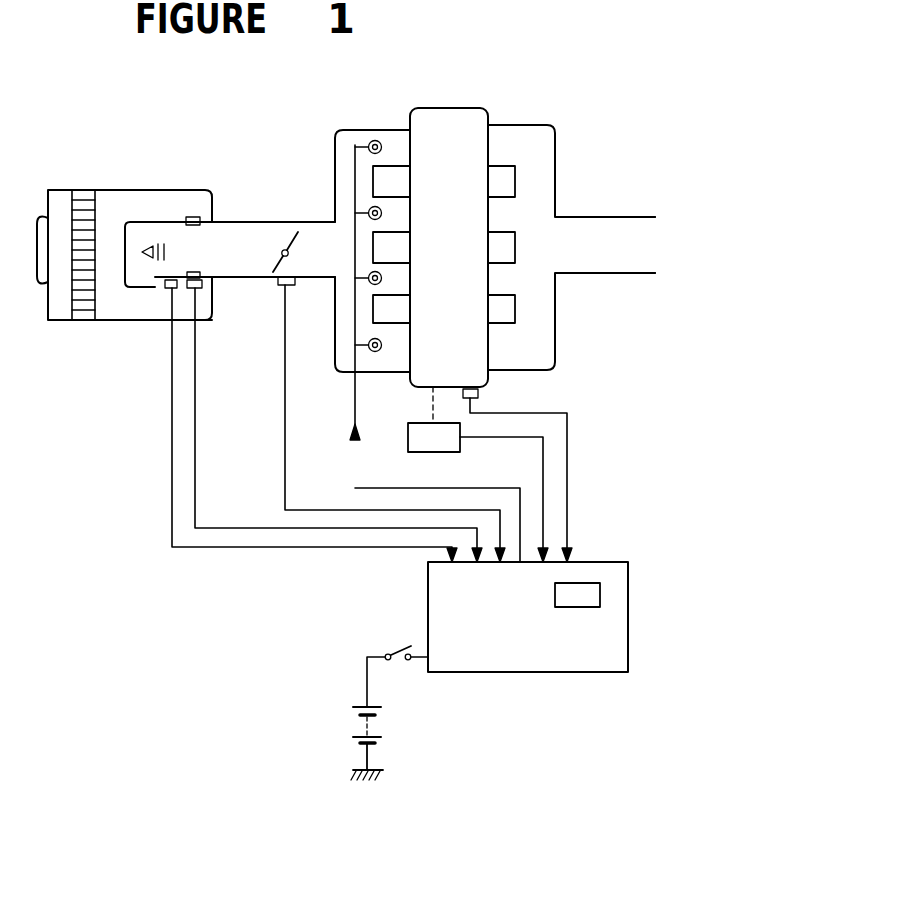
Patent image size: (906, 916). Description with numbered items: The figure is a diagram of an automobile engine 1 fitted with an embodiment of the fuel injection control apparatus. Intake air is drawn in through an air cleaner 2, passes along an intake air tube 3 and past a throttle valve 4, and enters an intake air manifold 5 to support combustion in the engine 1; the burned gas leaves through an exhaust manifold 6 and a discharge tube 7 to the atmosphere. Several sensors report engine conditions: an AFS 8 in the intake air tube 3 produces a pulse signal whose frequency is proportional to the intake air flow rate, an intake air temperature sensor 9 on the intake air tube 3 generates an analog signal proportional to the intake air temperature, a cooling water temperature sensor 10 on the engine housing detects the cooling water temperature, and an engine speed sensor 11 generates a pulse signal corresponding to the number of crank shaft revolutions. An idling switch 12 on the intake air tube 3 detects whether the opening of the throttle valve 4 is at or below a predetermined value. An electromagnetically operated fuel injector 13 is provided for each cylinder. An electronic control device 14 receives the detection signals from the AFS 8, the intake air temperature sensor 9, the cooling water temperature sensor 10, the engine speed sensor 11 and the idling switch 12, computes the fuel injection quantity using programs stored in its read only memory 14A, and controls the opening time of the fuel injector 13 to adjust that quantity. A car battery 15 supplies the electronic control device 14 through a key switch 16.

The engine 1 is at (452, 108).
The air cleaner 2 is at (83, 312).
The intake air tube 3 is at (243, 222).
The throttle valve 4 is at (288, 230).
The intake air manifold 5 is at (335, 140).
The exhaust manifold 6 is at (540, 125).
The discharge tube 7 is at (615, 217).
The AFS 8 is at (200, 290).
The intake air temperature sensor 9 is at (165, 290).
The cooling water temperature sensor 10 is at (480, 393).
The engine speed sensor 11 is at (433, 452).
The idling switch 12 is at (276, 284).
The electromagnetically operated fuel injector 13 is at (375, 140).
The electronic control device 14 is at (628, 637).
The read only memory 14A is at (600, 590).
The car battery 15 is at (380, 722).
The key switch 16 is at (398, 650).